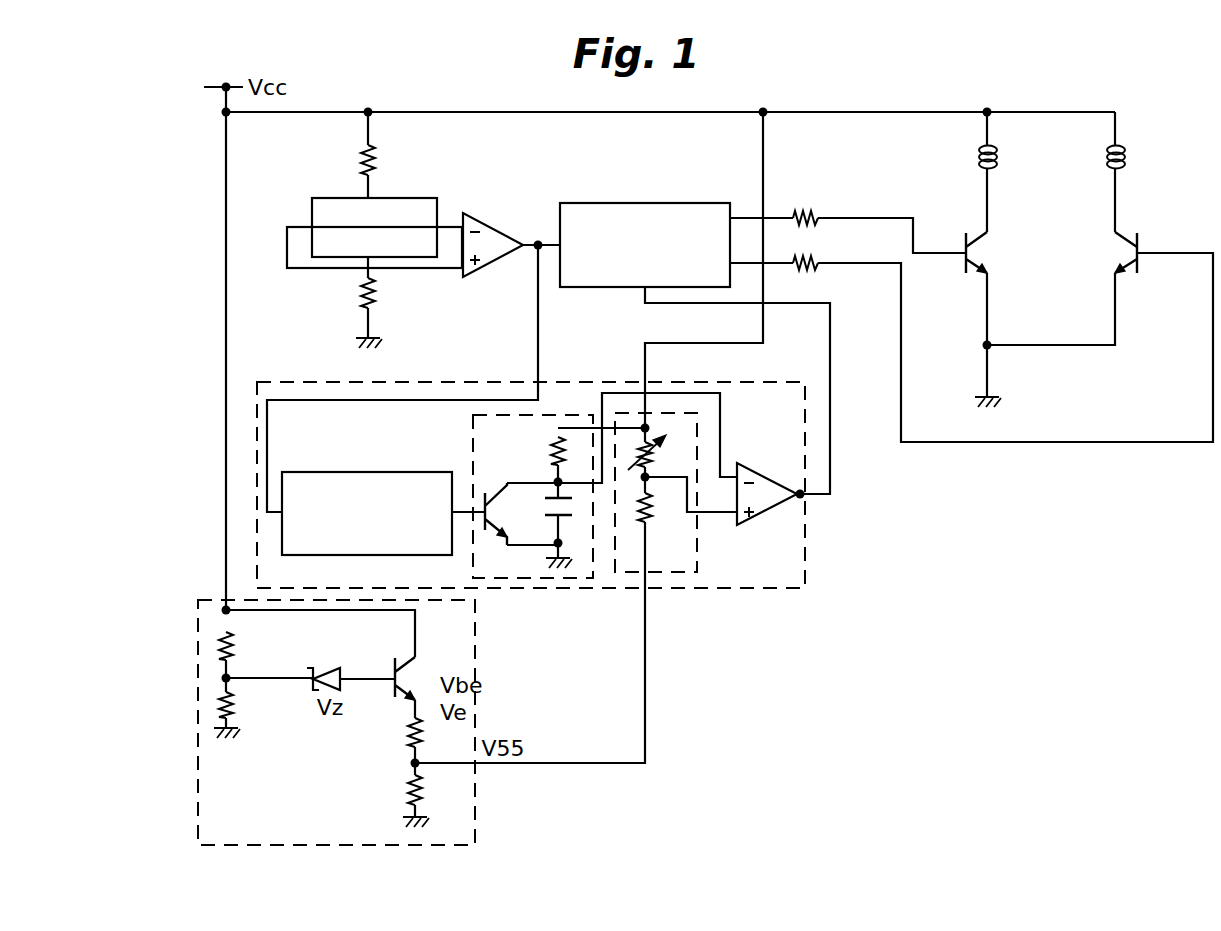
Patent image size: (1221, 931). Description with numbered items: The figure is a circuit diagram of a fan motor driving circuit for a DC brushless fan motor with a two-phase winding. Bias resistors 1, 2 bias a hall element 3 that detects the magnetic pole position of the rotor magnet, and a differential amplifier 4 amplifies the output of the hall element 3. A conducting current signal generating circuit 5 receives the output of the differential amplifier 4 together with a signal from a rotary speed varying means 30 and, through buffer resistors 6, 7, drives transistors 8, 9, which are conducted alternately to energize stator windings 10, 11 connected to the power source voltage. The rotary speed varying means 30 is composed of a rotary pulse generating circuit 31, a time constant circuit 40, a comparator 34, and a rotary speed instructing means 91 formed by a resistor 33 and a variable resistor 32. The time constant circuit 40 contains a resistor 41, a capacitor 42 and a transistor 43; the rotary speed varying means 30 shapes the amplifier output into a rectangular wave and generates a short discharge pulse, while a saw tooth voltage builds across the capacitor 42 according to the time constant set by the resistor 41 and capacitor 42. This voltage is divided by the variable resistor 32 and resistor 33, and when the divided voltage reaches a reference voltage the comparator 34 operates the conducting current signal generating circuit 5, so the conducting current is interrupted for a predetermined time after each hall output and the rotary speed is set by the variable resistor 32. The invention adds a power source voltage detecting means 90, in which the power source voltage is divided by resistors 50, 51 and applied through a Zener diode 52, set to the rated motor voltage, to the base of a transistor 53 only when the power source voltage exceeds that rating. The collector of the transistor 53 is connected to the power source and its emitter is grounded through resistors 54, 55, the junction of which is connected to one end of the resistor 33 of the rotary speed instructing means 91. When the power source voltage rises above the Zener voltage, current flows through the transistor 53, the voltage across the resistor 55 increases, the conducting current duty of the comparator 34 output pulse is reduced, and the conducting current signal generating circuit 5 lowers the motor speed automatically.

The bias resistor 1 is at (363, 150).
The bias resistor 2 is at (363, 298).
The hall element 3 is at (397, 198).
The differential amplifier 4 is at (478, 215).
The conducting current signal generating circuit 5 is at (578, 203).
The buffer resistor 6 is at (808, 218).
The buffer resistor 7 is at (815, 263).
The transistor 8 is at (985, 268).
The transistor 9 is at (1120, 266).
The stator winding 10 is at (998, 150).
The stator winding 11 is at (1130, 160).
The rotary speed varying means 30 is at (312, 380).
The rotary pulse generating circuit 31 is at (337, 472).
The variable resistor 32 is at (655, 462).
The resistor 33 is at (650, 525).
The comparator 34 is at (752, 468).
The time constant circuit 40 is at (473, 428).
The resistor 41 is at (553, 448).
The capacitor 42 is at (570, 507).
The transistor 43 is at (500, 508).
The resistor 50 is at (220, 645).
The resistor 51 is at (220, 700).
The Zener diode 52 is at (333, 668).
The transistor 53 is at (420, 656).
The resistor 54 is at (410, 730).
The resistor 55 is at (410, 785).
The power source voltage detecting means 90 is at (478, 828).
The rotary speed instructing means 91 is at (670, 575).